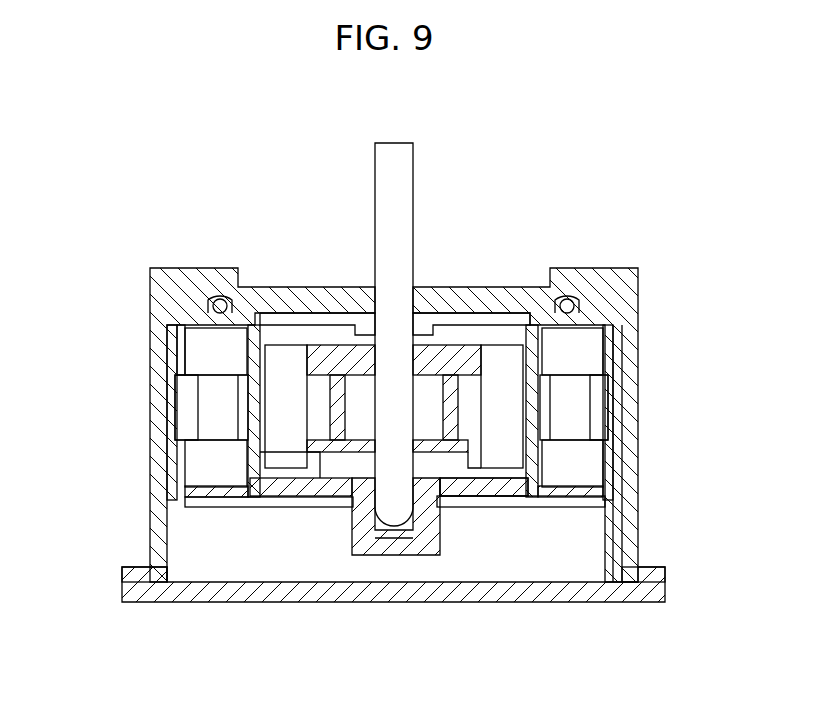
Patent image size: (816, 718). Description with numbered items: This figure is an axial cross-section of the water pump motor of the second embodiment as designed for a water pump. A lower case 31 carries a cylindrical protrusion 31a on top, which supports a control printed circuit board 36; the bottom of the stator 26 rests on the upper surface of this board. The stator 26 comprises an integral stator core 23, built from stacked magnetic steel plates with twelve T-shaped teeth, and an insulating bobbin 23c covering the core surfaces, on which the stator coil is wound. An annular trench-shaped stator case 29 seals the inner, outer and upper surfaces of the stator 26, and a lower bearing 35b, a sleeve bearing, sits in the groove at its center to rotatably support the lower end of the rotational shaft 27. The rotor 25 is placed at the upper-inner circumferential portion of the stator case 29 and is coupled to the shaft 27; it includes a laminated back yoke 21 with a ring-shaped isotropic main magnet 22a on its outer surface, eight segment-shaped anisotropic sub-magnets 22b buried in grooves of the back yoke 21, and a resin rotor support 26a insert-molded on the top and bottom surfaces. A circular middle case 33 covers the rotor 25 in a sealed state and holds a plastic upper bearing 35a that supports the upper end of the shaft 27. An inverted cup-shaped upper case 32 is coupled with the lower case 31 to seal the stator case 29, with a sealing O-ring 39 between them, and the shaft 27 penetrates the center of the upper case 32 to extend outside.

The back yoke 21 is at (328, 392).
The isotropic main magnet 22a is at (325, 321).
The anisotropic sub-magnets 22b is at (394, 563).
The stator core 23 is at (328, 407).
The bobbin 23c is at (116, 341).
The rotor 25 is at (484, 582).
The stator 26 is at (521, 582).
The rotor support 26a is at (248, 572).
The rotational shaft 27 is at (330, 328).
The stator case 29 is at (331, 412).
The lower case 31 is at (357, 580).
The cylindrical protrusion 31a is at (379, 547).
The upper case 32 is at (380, 252).
The middle case 33 is at (370, 399).
The upper bearing 35a is at (350, 337).
The lower bearing 35b is at (389, 582).
The control printed circuit board 36 is at (326, 480).
The sealing O-ring 39 is at (393, 245).